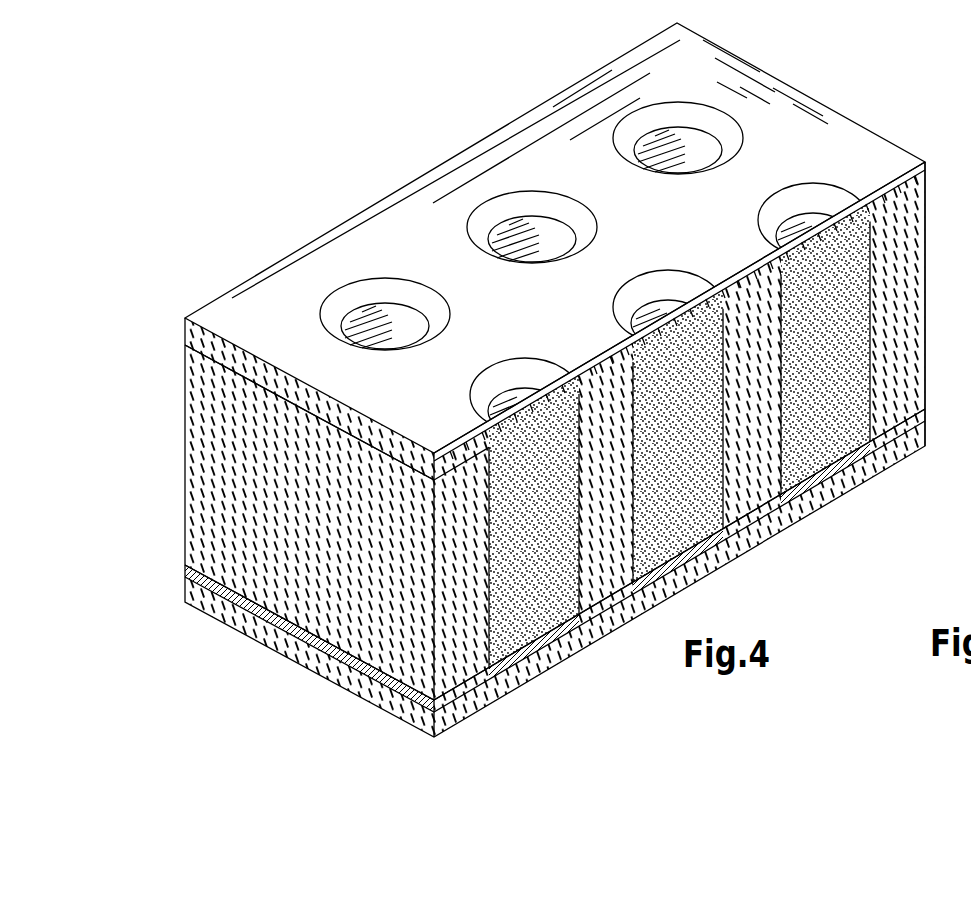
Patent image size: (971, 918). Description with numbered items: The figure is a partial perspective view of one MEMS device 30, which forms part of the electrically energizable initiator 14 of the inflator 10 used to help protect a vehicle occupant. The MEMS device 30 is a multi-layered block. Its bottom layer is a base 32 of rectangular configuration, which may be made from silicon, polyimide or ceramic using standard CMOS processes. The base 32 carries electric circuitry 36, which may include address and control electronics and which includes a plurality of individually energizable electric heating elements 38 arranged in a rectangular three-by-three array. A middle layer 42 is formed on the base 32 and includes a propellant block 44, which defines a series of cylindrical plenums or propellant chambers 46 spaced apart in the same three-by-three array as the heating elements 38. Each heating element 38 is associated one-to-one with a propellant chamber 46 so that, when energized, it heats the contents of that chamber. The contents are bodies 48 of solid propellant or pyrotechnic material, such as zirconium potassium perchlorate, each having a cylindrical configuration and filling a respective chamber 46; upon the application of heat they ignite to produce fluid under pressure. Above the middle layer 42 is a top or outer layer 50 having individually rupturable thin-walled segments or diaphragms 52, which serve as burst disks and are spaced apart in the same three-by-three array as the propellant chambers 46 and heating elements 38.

The inflator 10 is at (220, 686).
The electrically energizable initiator 14 is at (247, 703).
The MEMS device 30 is at (294, 712).
The base 32 is at (394, 720).
The electric circuitry 36 is at (758, 533).
The electric heating elements 38 is at (540, 657).
The middle layer 42 is at (182, 467).
The propellant block 44 is at (932, 338).
The propellant chambers 46 is at (631, 538).
The propellant bodies 48 is at (692, 407).
The outer layer 50 is at (850, 110).
The diaphragms 52 is at (388, 314).